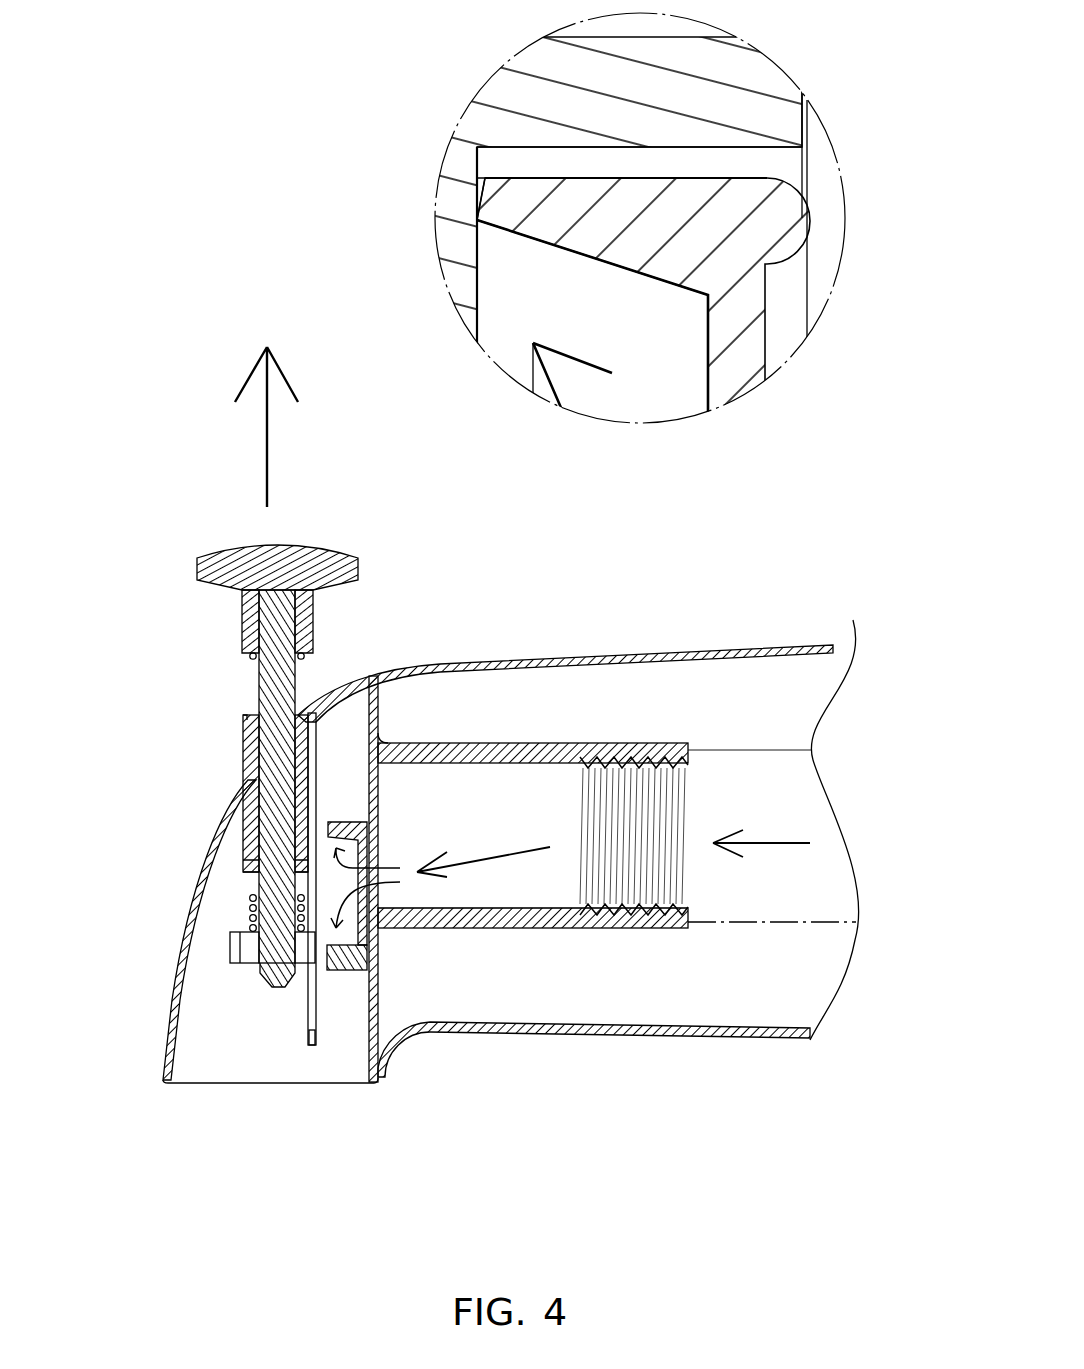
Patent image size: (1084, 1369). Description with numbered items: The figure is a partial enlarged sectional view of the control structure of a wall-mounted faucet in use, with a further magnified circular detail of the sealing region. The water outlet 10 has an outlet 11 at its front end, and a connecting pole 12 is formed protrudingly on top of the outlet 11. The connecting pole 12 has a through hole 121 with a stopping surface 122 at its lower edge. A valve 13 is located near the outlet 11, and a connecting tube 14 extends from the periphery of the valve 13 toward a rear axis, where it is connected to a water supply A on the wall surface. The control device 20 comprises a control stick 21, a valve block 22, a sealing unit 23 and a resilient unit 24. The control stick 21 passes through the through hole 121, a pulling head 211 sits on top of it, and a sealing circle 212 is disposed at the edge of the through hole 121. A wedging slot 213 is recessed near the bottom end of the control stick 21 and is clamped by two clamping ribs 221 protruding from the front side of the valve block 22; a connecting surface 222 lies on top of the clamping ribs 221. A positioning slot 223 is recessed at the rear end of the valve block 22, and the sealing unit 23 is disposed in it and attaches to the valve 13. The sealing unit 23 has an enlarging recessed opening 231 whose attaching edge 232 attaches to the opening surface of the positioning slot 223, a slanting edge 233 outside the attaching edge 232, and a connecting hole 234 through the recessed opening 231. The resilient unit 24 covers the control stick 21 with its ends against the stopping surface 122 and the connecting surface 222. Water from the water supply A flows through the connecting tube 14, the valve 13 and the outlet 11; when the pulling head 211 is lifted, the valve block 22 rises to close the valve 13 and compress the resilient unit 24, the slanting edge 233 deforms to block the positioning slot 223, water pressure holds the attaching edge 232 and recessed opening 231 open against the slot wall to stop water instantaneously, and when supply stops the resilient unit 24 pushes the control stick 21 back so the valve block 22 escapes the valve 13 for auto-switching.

The water outlet 10 is at (533, 653).
The outlet 11 is at (165, 1069).
The connecting pole 12 is at (247, 743).
The through hole 121 is at (245, 716).
The stopping surface 122 is at (247, 857).
The valve 13 is at (370, 790).
The connecting tube 14 is at (533, 927).
The control device 20 is at (236, 743).
The control stick 21 is at (265, 633).
The pulling head 211 is at (247, 557).
The sealing circle 212 is at (312, 652).
The wedging slot 213 is at (230, 948).
The valve block 22 is at (537, 97).
The clamping ribs 221 is at (272, 947).
The connecting surface 222 is at (248, 923).
The positioning slot 223 is at (475, 147).
The sealing unit 23 is at (740, 365).
The recessed opening 231 is at (553, 320).
The attaching edge 232 is at (483, 213).
The slanting edge 233 is at (475, 192).
The connecting hole 234 is at (390, 930).
The resilient unit 24 is at (301, 913).
The water supply A is at (843, 928).